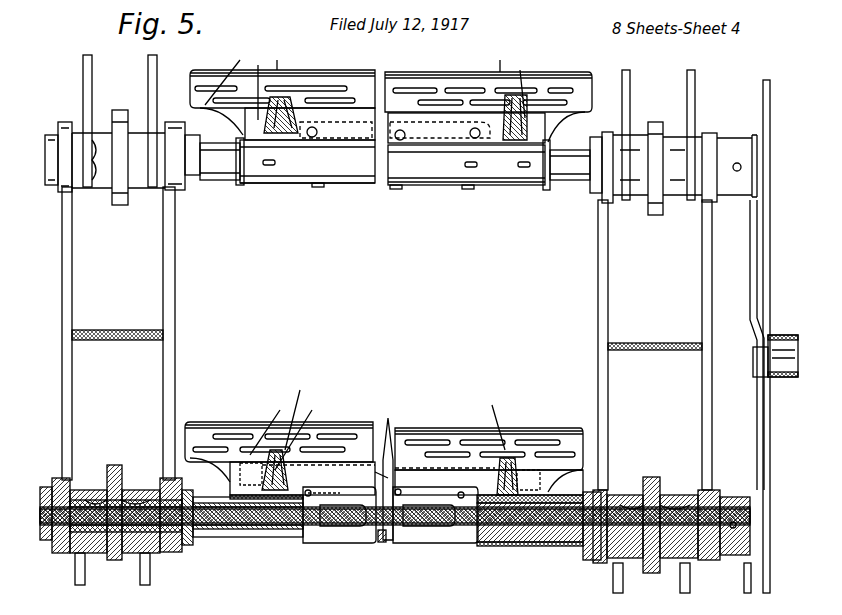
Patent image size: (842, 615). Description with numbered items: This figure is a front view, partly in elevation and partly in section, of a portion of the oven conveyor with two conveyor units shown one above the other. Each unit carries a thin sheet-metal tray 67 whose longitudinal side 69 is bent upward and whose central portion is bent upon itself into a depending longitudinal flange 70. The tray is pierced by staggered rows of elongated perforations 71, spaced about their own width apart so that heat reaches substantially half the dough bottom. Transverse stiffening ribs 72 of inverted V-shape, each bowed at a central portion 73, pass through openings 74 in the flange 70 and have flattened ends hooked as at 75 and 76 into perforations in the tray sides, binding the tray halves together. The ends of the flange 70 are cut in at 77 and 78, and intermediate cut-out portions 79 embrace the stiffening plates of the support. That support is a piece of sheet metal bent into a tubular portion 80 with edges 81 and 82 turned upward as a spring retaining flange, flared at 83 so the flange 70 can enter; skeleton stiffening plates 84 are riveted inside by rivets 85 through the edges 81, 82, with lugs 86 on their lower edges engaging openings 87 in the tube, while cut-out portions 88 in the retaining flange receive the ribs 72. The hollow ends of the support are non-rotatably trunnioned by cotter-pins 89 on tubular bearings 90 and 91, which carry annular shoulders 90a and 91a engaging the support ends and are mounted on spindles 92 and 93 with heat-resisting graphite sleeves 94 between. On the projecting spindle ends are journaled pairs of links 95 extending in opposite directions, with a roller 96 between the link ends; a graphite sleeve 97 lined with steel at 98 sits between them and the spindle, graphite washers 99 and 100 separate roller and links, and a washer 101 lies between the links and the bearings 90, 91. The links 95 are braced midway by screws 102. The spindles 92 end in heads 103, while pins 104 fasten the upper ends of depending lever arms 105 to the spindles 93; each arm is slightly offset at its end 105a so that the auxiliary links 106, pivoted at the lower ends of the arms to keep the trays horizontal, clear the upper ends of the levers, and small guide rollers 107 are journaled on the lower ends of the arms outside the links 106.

The tray 67 is at (247, 250).
The upwardly bent longitudinal side of tray 69 is at (350, 85).
The depending longitudinal flange 70 is at (243, 118).
The elongated slots or perforations 71 is at (299, 434).
The stiffening rib 72 is at (290, 112).
The bowed central portion of rib 73 is at (298, 133).
The opening in flange 74 is at (546, 478).
The hooked end of rib 75 is at (388, 57).
The hooked end of rib 76 is at (395, 414).
The cut-in end of flange 77 is at (208, 115).
The cut-in end of flange 78 is at (575, 120).
The cut-out portion of flange 79 is at (415, 90).
The tubular portion of tray support 80 is at (347, 186).
The upwardly bent edge of support 81 is at (320, 135).
The upwardly bent edge of support 82 is at (383, 475).
The flared upper edge of support 83 is at (405, 137).
The stiffening plate 84 is at (430, 168).
The rivet 85 is at (312, 493).
The lug 86 is at (318, 188).
The opening in tube portion 87 is at (381, 545).
The cut-out portion of retaining flange 88 is at (558, 492).
The cotter-pin 89 is at (250, 545).
The tubular bearing 90 is at (215, 180).
The annular shoulder 90a is at (243, 185).
The tubular bearing 91 is at (560, 184).
The annular shoulder 91a is at (546, 183).
The spindle 92 is at (182, 548).
The spindle 93 is at (576, 548).
The graphite sleeve 94 is at (240, 548).
The link 95 is at (88, 82).
The roller 96 is at (116, 206).
The graphite lubricating sleeve 97 is at (95, 470).
The steel lining 98 is at (132, 485).
The graphite washer 99 is at (100, 192).
The graphite washer 100 is at (148, 192).
The washer 101 is at (184, 192).
The screw 102 is at (106, 332).
The head 103 is at (50, 187).
The pin 104 is at (737, 163).
The lever arm 105 is at (751, 252).
The offset end of lever arm 105a is at (752, 336).
The auxiliary link 106 is at (771, 218).
The guide roller 107 is at (783, 336).